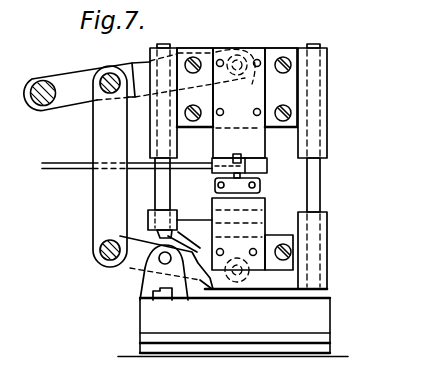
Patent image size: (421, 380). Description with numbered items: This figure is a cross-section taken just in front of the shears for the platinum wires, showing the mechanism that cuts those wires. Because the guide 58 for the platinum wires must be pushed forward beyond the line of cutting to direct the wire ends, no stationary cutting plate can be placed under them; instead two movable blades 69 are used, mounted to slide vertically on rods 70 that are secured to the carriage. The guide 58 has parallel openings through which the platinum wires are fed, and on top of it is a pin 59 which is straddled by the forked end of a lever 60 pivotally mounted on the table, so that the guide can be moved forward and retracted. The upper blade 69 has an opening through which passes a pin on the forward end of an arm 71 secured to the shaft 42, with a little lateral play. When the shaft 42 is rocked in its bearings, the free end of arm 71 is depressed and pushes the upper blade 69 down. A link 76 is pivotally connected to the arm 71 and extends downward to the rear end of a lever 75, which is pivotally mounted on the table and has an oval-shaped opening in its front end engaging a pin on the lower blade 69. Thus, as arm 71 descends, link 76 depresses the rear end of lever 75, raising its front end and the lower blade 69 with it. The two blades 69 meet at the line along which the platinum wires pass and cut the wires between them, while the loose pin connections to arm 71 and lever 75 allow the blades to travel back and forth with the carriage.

The shaft 42 is at (40, 82).
The arm 71 is at (73, 76).
The link 76 is at (101, 203).
The lever 60 is at (77, 162).
The rods 70 is at (170, 45).
The movable blades 69 is at (258, 152).
The pin 59 is at (237, 154).
The guide 58 is at (262, 185).
The lever 75 is at (137, 262).